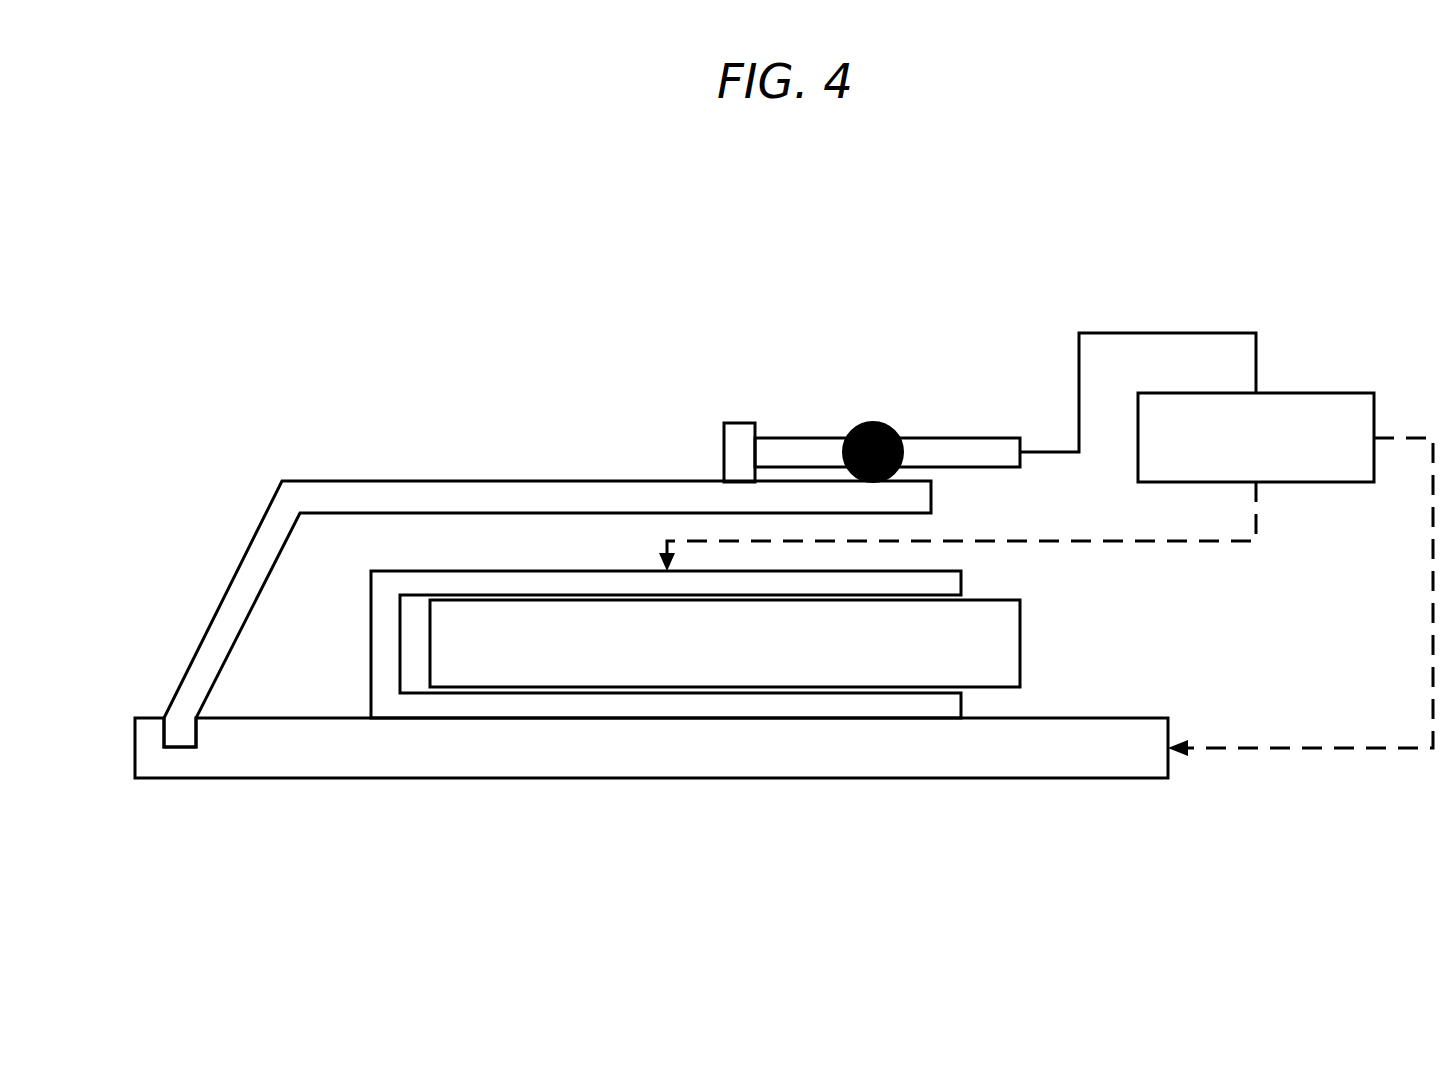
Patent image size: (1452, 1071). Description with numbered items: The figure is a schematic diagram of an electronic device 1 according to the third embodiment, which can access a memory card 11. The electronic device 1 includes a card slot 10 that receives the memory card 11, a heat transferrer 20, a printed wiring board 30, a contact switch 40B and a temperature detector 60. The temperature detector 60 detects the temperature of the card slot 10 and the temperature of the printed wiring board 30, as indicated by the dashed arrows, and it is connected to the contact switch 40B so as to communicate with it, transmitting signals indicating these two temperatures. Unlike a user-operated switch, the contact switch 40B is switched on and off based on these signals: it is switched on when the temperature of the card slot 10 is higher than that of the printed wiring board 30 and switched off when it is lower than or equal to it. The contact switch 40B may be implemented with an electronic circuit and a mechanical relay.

The electronic device 1 is at (541, 292).
The card slot 10 is at (371, 630).
The memory card 11 is at (1020, 630).
The heat transferrer 20 is at (370, 481).
The printed wiring board 30 is at (873, 779).
The contact switch 40B is at (962, 436).
The temperature detector 60 is at (1285, 393).